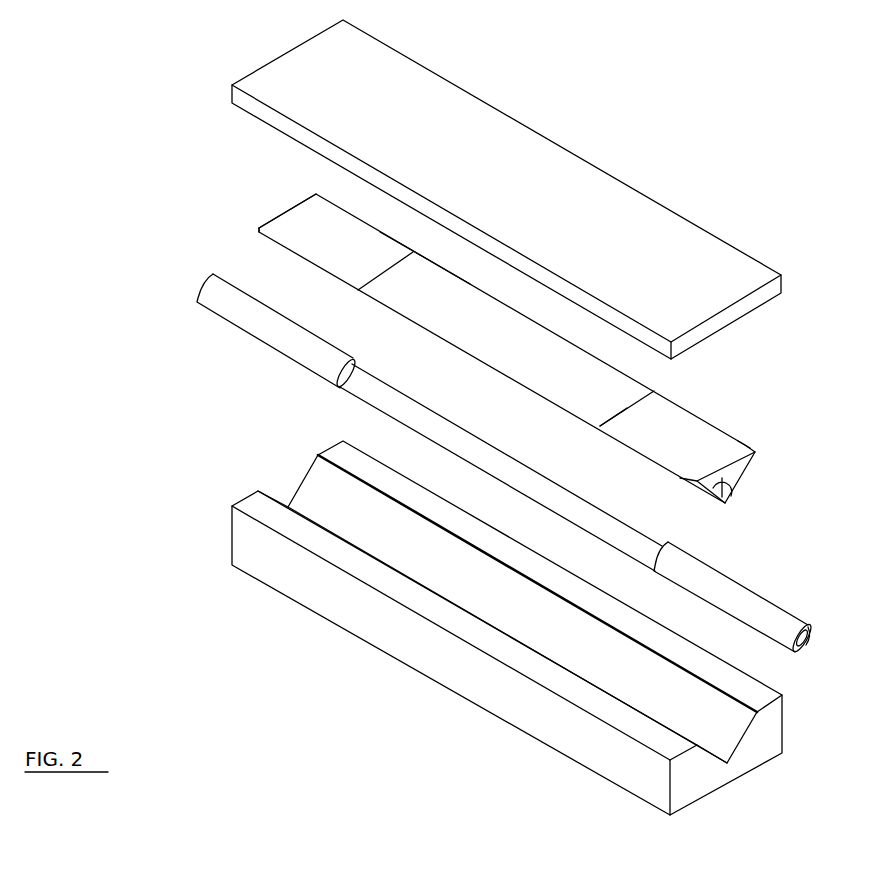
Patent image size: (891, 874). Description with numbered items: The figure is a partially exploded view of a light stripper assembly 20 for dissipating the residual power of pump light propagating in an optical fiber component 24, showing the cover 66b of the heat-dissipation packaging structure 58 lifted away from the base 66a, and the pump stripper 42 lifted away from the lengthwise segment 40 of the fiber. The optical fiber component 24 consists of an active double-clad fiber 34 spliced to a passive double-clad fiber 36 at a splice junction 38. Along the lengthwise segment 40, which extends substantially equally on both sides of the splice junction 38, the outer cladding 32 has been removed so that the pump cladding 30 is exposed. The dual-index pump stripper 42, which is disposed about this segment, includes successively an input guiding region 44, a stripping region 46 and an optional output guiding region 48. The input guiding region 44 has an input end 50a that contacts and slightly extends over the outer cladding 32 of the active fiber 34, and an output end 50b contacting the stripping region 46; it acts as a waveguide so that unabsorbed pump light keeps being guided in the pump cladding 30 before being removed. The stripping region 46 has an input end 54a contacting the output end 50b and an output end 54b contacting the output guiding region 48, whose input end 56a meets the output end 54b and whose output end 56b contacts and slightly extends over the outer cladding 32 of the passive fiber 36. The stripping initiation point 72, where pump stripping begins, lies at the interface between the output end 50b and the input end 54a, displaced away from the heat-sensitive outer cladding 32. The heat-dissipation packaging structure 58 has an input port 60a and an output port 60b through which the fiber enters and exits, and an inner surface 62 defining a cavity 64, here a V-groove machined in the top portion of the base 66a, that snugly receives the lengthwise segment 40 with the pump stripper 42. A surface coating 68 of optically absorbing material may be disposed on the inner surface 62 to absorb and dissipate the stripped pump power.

The light stripper assembly 20 is at (766, 115).
The optical fiber component 24 is at (802, 597).
The pump cladding 30 is at (812, 640).
The outer cladding 32 is at (812, 630).
The active double-clad fiber 34 is at (205, 324).
The passive double-clad fiber 36 is at (791, 661).
The splice junction 38 is at (504, 468).
The lengthwise segment 40 is at (380, 424).
The pump stripper 42 is at (729, 402).
The input guiding region 44 is at (265, 232).
The stripping region 46 is at (445, 327).
The output guiding region 48 is at (690, 470).
The input end of input guiding region 50a is at (308, 212).
The output end of input guiding region 50b is at (400, 250).
The input end of stripping region 54a is at (372, 288).
The output end of stripping region 54b is at (640, 388).
The input end of output guiding region 56a is at (608, 436).
The output end of output guiding region 56b is at (750, 450).
The heat-dissipation packaging structure 58 is at (252, 600).
The input port 60a is at (247, 468).
The output port 60b is at (726, 805).
The inner surface 62 is at (418, 558).
The cavity 64 is at (530, 618).
The base 66a is at (785, 740).
The cover 66b is at (735, 262).
The surface coating 68 is at (745, 745).
The stripping initiation point 72 is at (382, 265).